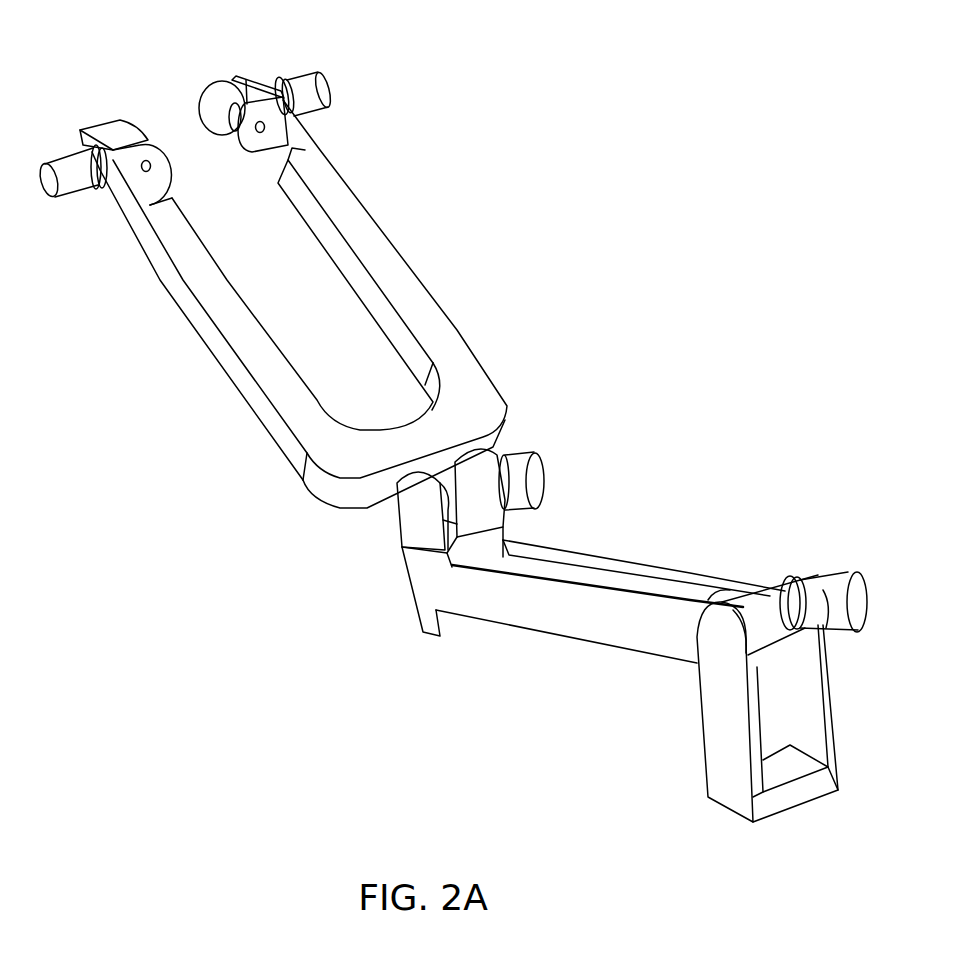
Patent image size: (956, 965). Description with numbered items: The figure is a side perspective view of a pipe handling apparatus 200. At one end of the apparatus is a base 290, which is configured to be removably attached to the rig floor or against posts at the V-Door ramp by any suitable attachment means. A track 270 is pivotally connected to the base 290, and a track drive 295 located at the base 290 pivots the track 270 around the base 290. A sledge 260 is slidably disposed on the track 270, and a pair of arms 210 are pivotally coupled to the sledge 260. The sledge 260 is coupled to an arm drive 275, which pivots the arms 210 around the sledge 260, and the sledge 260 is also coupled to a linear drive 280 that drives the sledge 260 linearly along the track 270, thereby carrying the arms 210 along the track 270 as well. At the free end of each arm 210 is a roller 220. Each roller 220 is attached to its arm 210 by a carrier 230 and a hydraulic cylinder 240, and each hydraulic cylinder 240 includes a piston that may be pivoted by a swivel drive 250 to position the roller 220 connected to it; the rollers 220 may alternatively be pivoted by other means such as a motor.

The pipe handling apparatus 200 is at (610, 185).
The arms 210 is at (207, 330).
The roller 220 is at (228, 97).
The carrier 230 is at (98, 130).
The hydraulic cylinder 240 is at (88, 193).
The swivel drive 250 is at (318, 90).
The sledge 260 is at (383, 527).
The track 270 is at (507, 608).
The arm drive 275 is at (527, 470).
The linear drive 280 is at (632, 532).
The base 290 is at (718, 745).
The track drive 295 is at (827, 580).